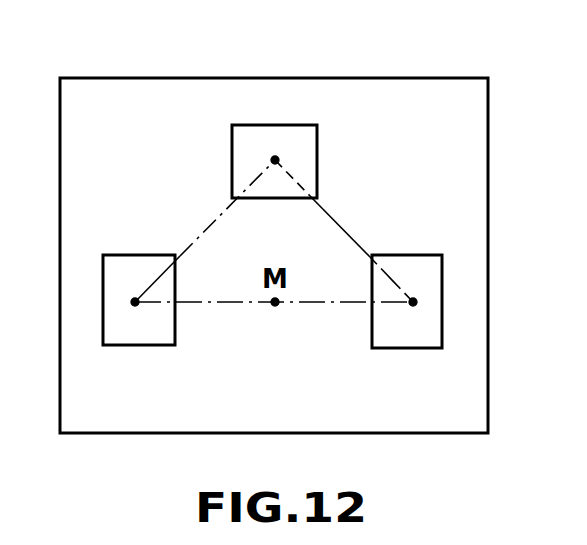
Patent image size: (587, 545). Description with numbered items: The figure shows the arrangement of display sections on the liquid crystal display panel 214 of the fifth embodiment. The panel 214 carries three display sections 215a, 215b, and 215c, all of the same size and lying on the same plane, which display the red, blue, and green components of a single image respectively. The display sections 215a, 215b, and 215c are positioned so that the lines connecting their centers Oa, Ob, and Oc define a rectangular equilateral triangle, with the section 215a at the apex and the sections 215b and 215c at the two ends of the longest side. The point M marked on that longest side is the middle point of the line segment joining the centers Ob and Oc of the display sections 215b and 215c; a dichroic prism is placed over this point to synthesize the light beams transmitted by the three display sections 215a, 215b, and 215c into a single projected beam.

The liquid crystal display panel 214 is at (408, 78).
The display section 215a is at (317, 143).
The display section 215b is at (412, 348).
The display section 215c is at (142, 345).